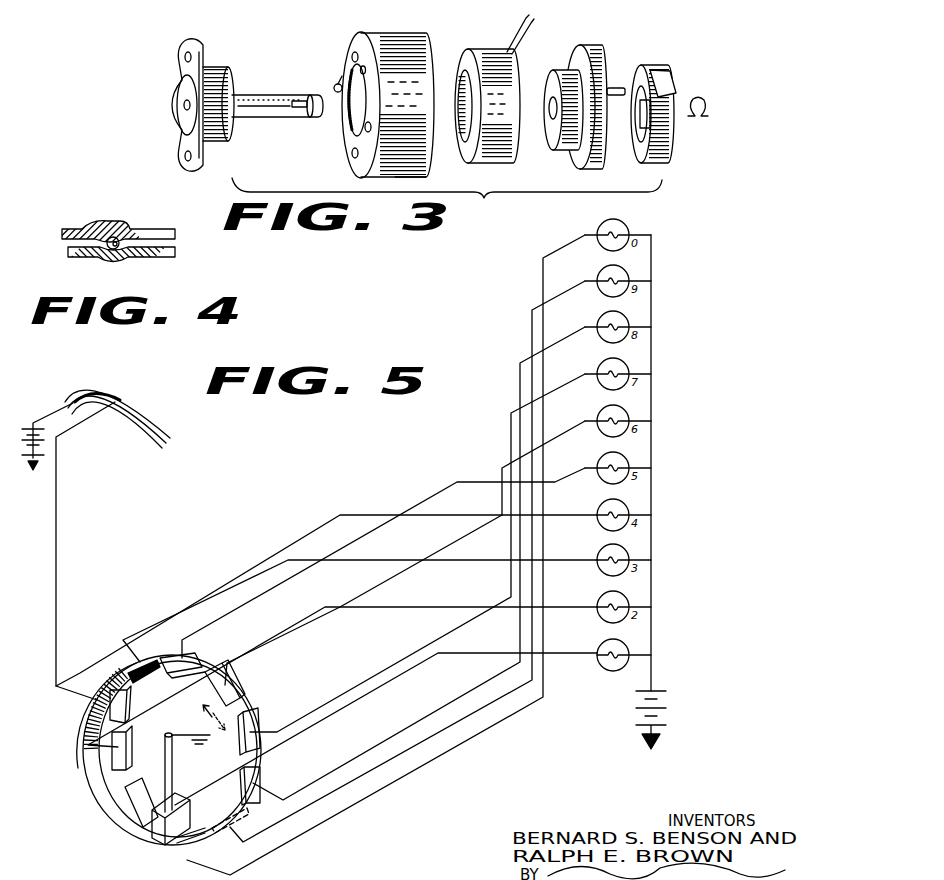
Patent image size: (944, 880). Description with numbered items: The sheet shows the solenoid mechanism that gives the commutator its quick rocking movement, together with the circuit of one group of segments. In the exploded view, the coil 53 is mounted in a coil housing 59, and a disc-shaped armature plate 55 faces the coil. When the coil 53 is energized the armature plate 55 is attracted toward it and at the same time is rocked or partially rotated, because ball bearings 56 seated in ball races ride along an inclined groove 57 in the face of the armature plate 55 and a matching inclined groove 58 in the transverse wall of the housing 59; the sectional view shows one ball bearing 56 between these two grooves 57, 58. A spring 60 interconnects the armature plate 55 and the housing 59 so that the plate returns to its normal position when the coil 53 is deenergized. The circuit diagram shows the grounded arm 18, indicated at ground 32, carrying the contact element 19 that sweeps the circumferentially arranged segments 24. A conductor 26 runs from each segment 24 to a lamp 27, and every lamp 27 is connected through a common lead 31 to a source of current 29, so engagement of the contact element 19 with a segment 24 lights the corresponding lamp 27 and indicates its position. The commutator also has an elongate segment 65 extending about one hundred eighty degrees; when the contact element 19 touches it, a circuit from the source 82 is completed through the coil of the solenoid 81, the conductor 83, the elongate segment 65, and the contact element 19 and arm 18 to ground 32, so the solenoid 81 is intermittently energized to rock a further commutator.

In FIG. 3, the coil 53 is at (492, 44).
In FIG. 3, the armature plate 55 is at (206, 153).
In FIG. 3, the ball bearings 56 is at (336, 84).
In FIG. 3, the inclined groove 57 is at (203, 50).
In FIG. 4, the inclined groove 57 is at (90, 228).
In FIG. 3, the inclined groove 58 is at (372, 33).
In FIG. 4, the inclined groove 58 is at (131, 256).
In FIG. 3, the coil housing 59 is at (425, 173).
In FIG. 3, the spring 60 is at (657, 63).
In FIG. 5, the arm 18 is at (176, 785).
In FIG. 5, the contact element 19 is at (186, 815).
In FIG. 5, the segment 24 is at (250, 722).
In FIG. 5, the conductor 26 is at (354, 665).
In FIG. 5, the lamp 27 is at (615, 672).
In FIG. 5, the source of current 29 is at (660, 692).
In FIG. 5, the common lead 31 is at (652, 540).
In FIG. 5, the ground 32 is at (203, 733).
In FIG. 5, the elongate segment 65 is at (118, 822).
In FIG. 5, the solenoid 81 is at (150, 410).
In FIG. 5, the source 82 is at (45, 413).
In FIG. 5, the conductor 83 is at (58, 575).